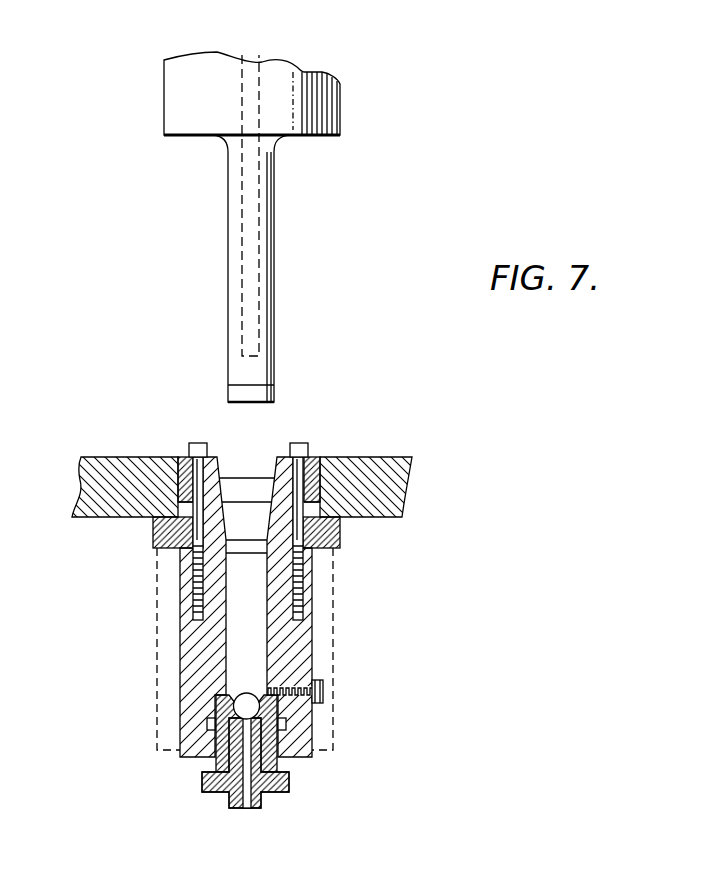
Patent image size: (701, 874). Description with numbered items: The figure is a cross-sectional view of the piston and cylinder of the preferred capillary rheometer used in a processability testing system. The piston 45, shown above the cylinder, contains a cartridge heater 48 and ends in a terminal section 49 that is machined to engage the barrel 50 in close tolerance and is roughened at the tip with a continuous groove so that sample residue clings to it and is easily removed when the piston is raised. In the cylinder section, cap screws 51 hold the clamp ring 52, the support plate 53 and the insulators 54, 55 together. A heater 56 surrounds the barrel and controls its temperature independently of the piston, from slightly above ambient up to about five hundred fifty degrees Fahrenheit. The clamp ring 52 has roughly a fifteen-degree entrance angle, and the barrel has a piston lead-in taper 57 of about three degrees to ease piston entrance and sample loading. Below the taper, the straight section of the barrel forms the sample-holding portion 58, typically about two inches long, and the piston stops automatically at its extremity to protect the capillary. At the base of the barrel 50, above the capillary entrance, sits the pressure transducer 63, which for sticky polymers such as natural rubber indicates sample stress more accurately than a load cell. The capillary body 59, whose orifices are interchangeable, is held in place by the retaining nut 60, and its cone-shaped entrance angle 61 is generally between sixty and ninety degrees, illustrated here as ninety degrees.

The piston 45 is at (228, 300).
The cartridge heater 48 is at (243, 212).
The terminal section 49 is at (274, 402).
The barrel 50 is at (180, 627).
The cap screws 51 is at (194, 443).
The clamp ring 52 is at (180, 455).
The support plate 53 is at (372, 455).
The insulator 54 is at (182, 487).
The insulator 55 is at (168, 532).
The heater 56 is at (335, 593).
The piston lead-in taper 57 is at (230, 543).
The sample-holding portion 58 is at (250, 640).
The capillary body 59 is at (222, 712).
The retaining nut 60 is at (289, 779).
The entrance angle 61 is at (243, 694).
The pressure transducer 63 is at (321, 680).